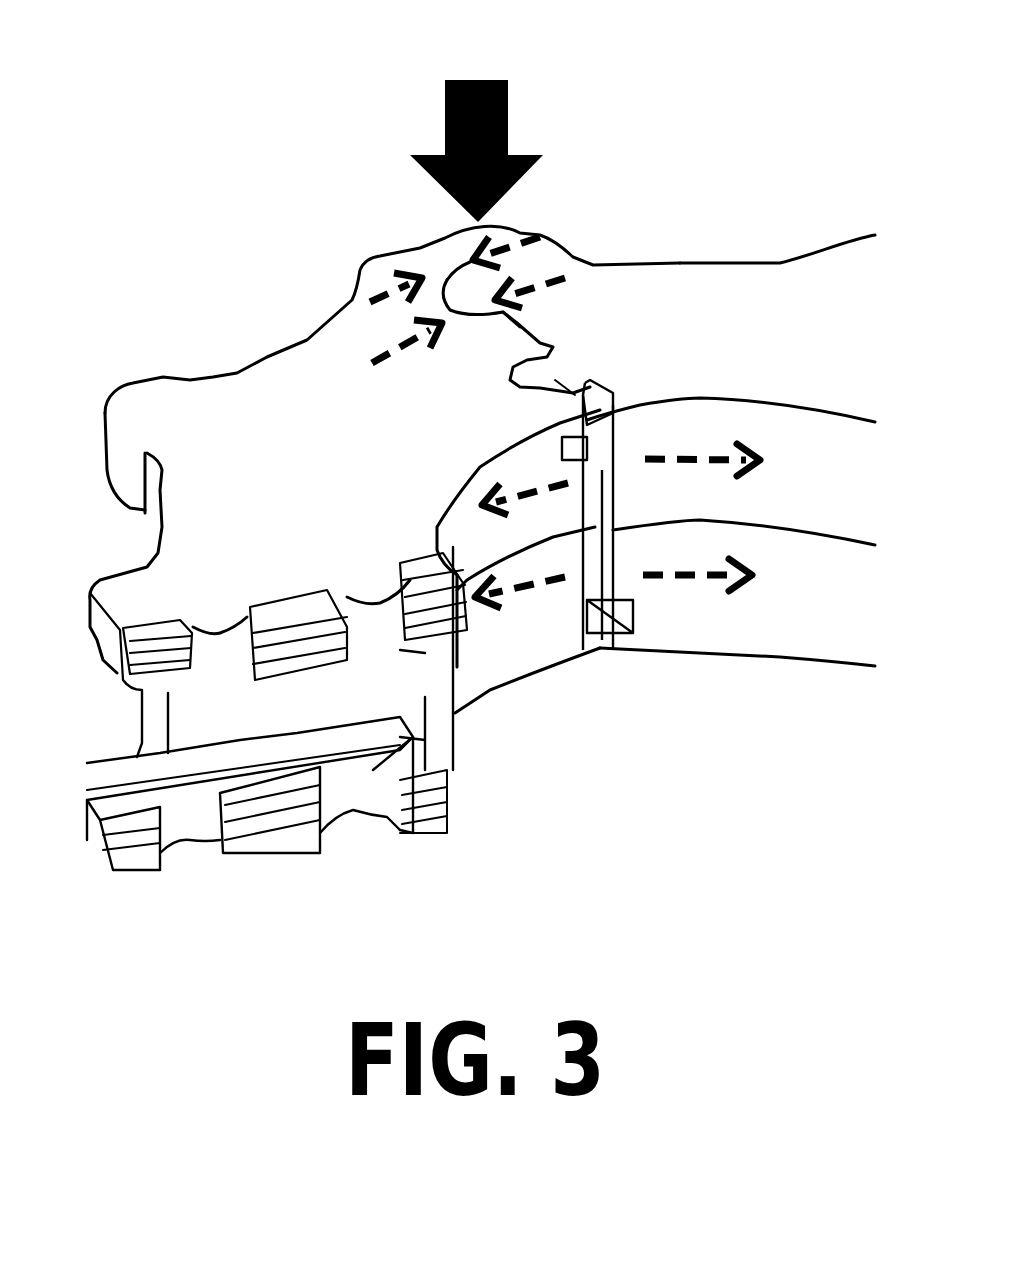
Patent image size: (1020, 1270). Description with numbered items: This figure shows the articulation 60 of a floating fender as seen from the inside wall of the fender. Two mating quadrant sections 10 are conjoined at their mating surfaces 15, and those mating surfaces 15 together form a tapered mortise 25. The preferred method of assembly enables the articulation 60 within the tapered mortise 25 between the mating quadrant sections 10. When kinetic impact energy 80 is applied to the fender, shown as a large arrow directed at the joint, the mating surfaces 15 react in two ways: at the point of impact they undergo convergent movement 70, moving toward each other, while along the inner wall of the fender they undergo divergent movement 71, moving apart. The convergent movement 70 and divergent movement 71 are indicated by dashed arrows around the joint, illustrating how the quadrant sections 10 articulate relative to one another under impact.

The quadrant section 10 is at (385, 469).
The mating surface 15 is at (565, 377).
The tapered mortise 25 is at (313, 700).
The articulation 60 is at (596, 665).
The convergent movement 70 is at (368, 362).
The divergent movement 71 is at (565, 510).
The kinetic impact energy 80 is at (476, 111).